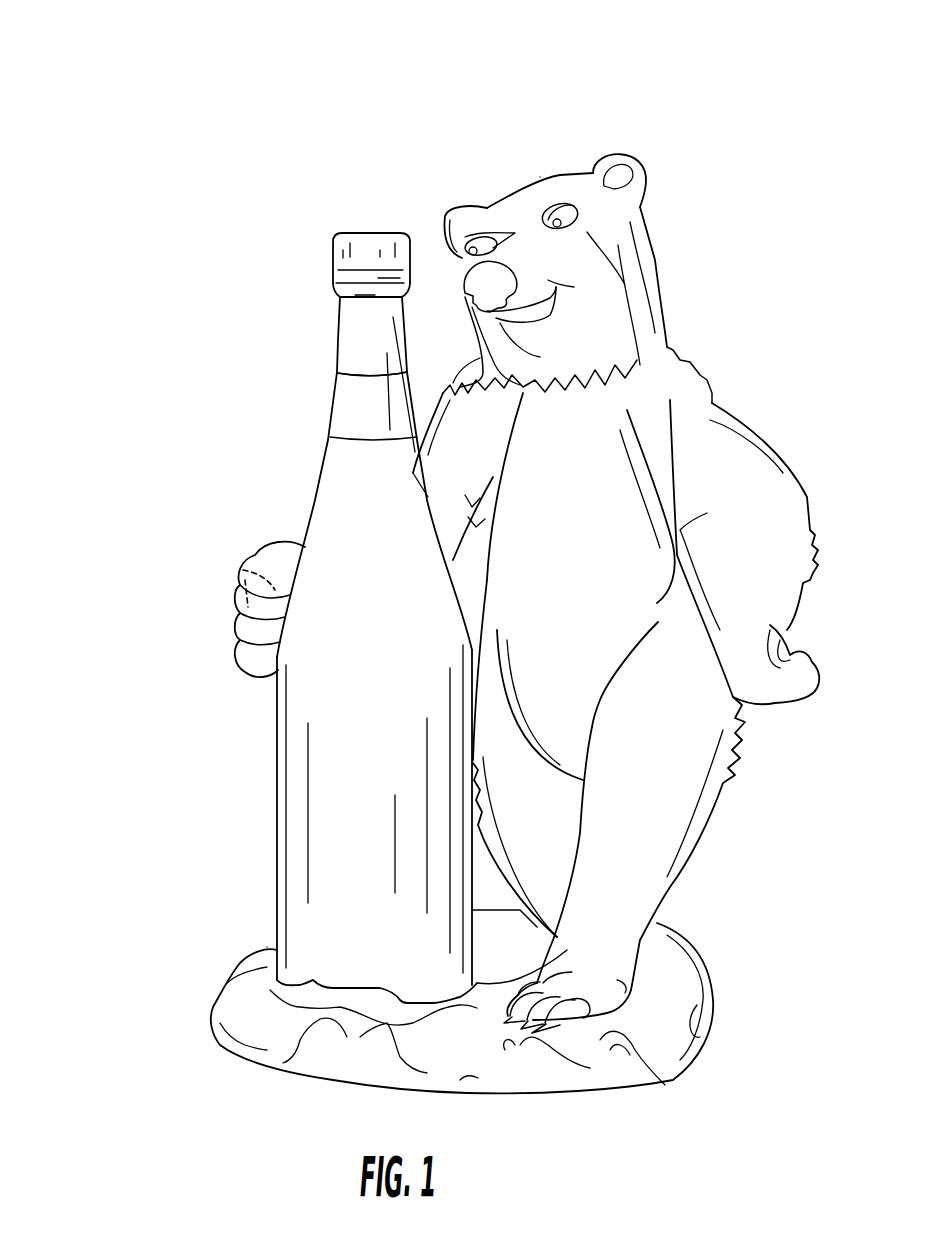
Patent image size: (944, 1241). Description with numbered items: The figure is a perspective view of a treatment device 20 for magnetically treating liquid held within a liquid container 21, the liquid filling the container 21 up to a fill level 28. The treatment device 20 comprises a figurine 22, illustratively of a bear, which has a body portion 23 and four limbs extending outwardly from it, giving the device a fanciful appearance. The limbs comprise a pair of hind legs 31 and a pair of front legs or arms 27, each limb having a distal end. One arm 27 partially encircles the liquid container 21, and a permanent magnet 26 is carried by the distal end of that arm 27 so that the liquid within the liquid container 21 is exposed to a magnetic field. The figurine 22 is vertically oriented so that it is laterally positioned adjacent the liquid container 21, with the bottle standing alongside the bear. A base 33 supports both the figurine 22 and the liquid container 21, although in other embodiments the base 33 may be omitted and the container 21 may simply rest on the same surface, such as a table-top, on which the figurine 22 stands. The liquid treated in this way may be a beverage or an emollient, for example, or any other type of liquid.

The treatment device 20 is at (325, 197).
The liquid container 21 is at (325, 847).
The figurine 22 is at (542, 177).
The body portion 23 is at (580, 470).
The permanent magnet 26 is at (270, 580).
The arm 27 is at (475, 490).
The fill level 28 is at (417, 455).
The leg 31 is at (515, 835).
The base 33 is at (670, 1083).